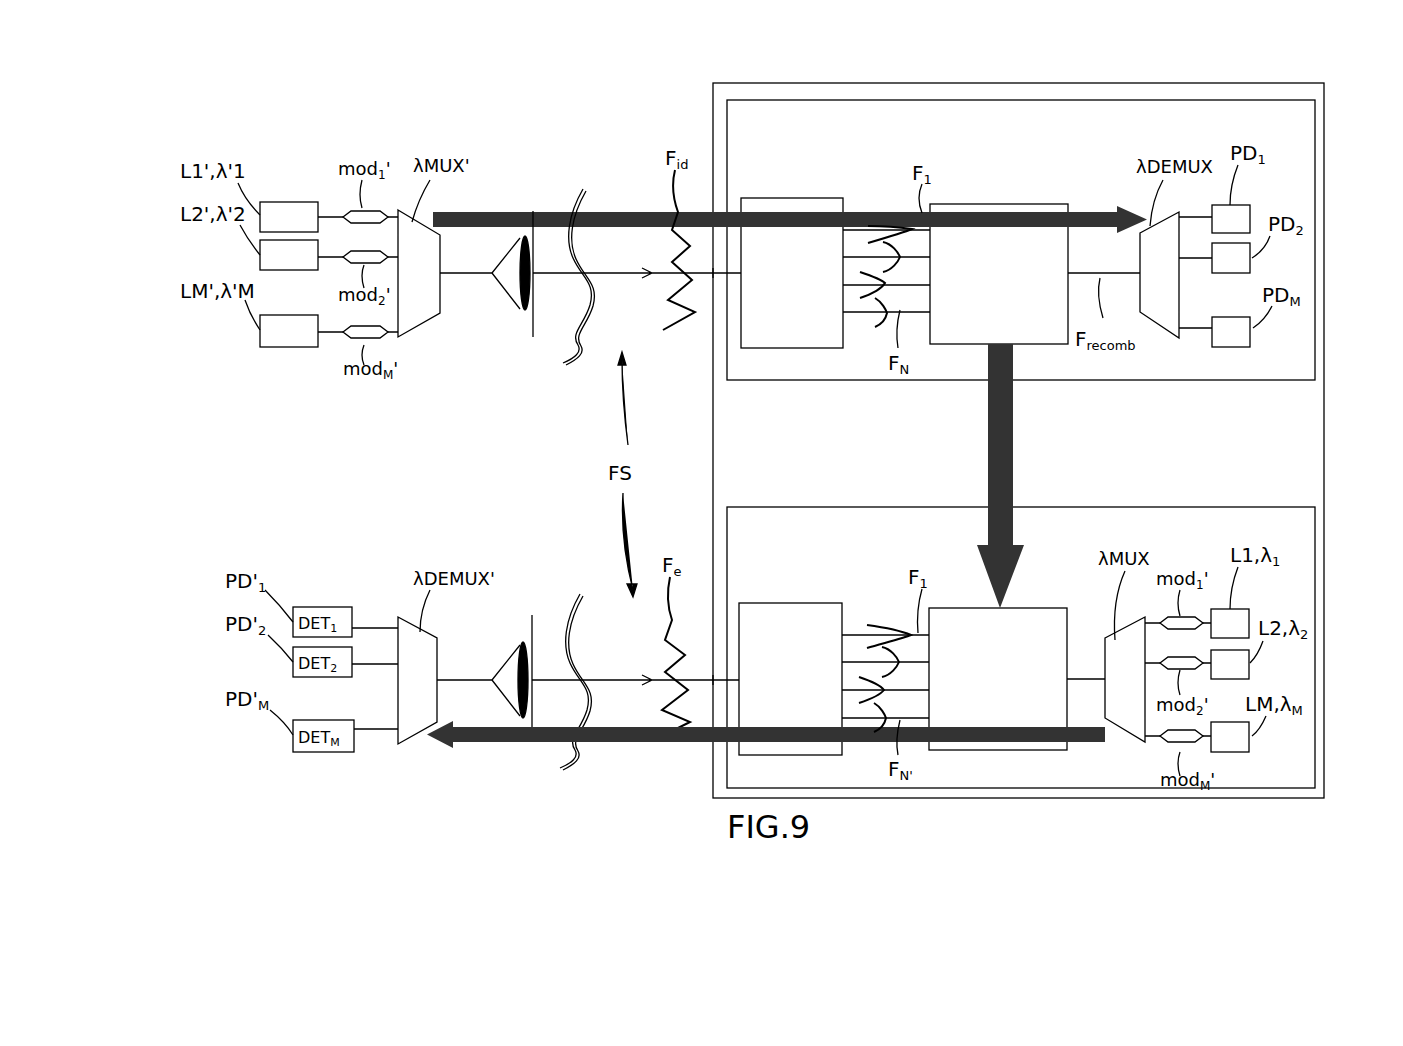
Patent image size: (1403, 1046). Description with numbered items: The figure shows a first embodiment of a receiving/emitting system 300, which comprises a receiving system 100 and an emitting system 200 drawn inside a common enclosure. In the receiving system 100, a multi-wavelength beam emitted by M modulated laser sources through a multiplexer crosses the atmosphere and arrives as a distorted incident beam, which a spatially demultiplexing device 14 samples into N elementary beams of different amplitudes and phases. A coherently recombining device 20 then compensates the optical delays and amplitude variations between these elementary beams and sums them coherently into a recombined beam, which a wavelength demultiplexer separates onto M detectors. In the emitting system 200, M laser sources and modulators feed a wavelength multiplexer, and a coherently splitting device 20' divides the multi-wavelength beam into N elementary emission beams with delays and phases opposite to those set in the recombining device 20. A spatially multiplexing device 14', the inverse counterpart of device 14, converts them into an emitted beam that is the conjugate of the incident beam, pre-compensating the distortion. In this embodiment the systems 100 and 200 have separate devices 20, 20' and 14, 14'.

The spatially demultiplexing device 14 is at (792, 249).
The coherently recombining device 20 is at (999, 237).
The receiving system 100 is at (1129, 381).
The emitting system 200 is at (890, 507).
The receiving/emitting system 300 is at (1030, 800).
The spatially multiplexing device 14' is at (790, 655).
The coherently splitting device 20' is at (1001, 645).